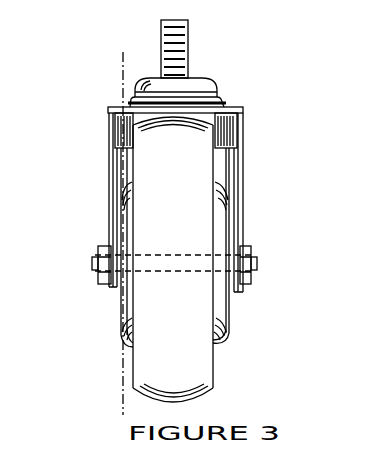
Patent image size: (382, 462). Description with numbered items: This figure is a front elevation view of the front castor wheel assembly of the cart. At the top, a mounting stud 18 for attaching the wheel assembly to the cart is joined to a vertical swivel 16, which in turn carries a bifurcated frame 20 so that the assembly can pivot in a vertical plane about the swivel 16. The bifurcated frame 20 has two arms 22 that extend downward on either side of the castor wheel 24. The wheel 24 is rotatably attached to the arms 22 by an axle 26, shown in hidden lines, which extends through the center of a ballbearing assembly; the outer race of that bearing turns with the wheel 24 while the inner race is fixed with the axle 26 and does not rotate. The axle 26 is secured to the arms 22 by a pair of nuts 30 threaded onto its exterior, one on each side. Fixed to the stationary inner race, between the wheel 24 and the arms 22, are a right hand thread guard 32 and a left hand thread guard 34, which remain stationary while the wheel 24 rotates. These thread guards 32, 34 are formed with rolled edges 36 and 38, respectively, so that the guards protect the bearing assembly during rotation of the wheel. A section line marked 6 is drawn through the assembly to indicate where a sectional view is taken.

The section line 6- 6 is at (135, 74).
The vertical swivel 16 is at (208, 80).
The mounting stud 18 is at (161, 36).
The bifurcated frame 20 is at (236, 124).
The arms 22 is at (116, 232).
The castor wheel 24 is at (192, 357).
The axle 26 is at (266, 265).
The nuts 30 is at (106, 268).
The right hand thread guard 32 is at (232, 290).
The left hand thread guard 34 is at (121, 318).
The rolled edge 36 is at (226, 333).
The rolled edge 38 is at (129, 345).